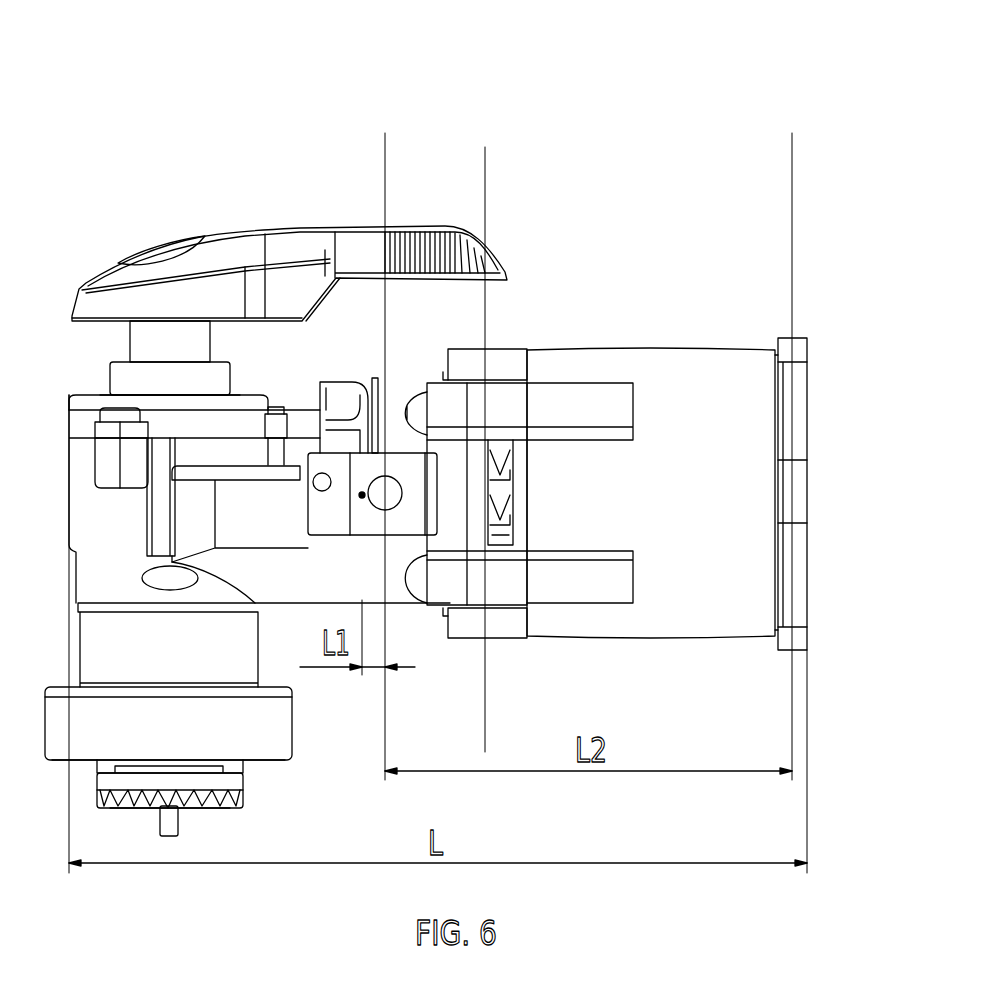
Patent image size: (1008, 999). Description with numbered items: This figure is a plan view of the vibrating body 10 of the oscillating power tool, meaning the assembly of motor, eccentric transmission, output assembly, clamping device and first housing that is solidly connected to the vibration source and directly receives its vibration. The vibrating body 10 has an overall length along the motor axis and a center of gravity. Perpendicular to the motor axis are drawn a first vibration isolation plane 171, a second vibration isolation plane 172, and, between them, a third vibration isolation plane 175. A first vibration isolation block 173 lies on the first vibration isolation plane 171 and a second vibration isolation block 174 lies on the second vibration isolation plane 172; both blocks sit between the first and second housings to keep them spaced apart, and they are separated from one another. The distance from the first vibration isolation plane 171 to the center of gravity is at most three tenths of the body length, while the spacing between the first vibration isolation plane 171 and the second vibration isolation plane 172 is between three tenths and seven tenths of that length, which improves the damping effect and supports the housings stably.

The vibrating body 10 is at (461, 418).
The first vibration isolation plane 171 is at (385, 183).
The second vibration isolation plane 172 is at (792, 183).
The first vibration isolation block 173 is at (397, 527).
The second vibration isolation block 174 is at (803, 635).
The third vibration isolation plane 175 is at (485, 195).